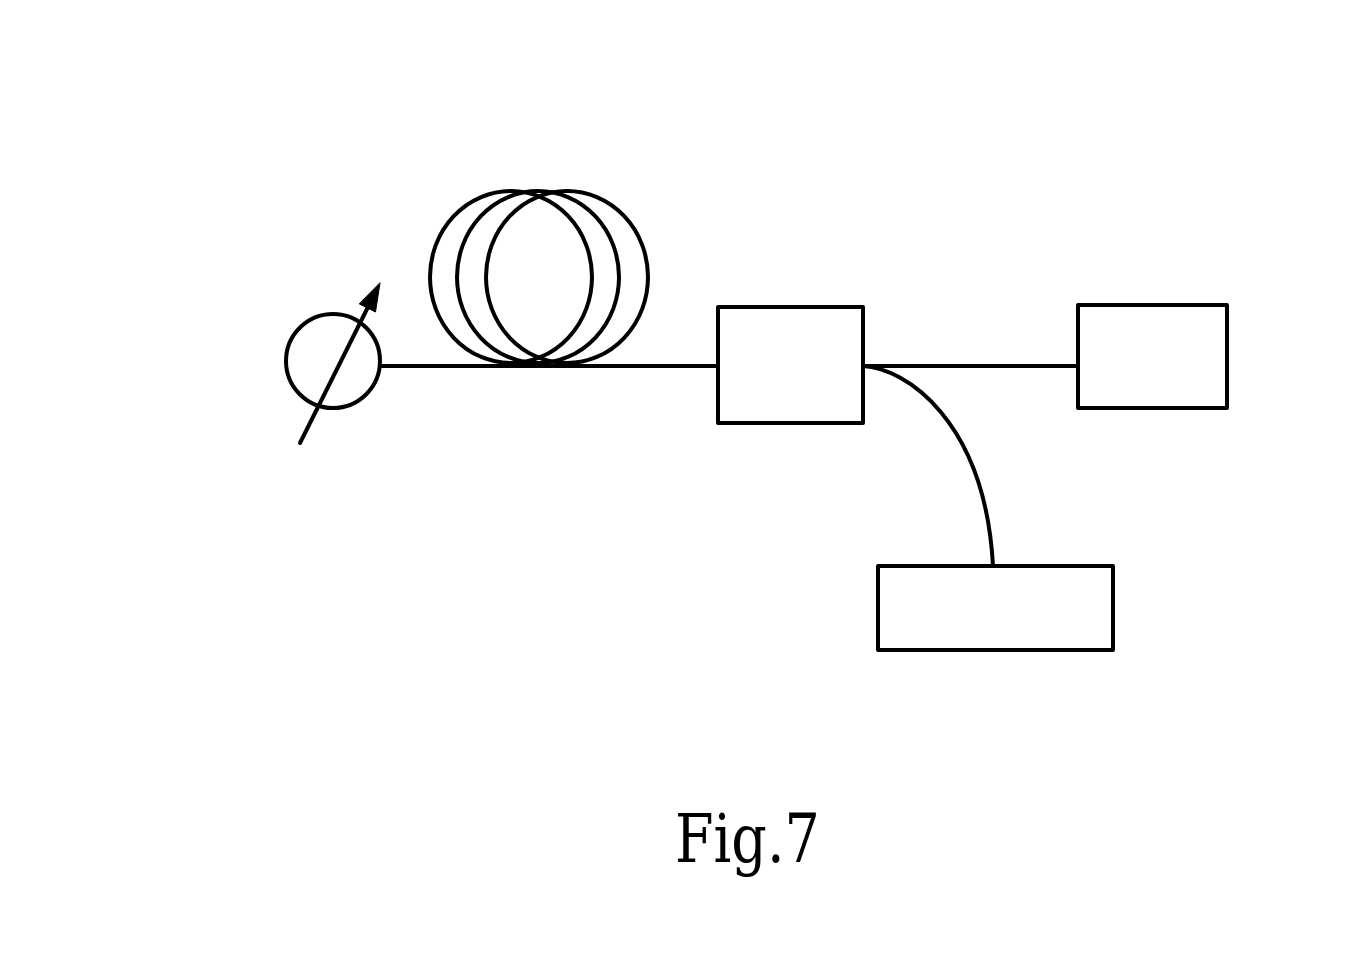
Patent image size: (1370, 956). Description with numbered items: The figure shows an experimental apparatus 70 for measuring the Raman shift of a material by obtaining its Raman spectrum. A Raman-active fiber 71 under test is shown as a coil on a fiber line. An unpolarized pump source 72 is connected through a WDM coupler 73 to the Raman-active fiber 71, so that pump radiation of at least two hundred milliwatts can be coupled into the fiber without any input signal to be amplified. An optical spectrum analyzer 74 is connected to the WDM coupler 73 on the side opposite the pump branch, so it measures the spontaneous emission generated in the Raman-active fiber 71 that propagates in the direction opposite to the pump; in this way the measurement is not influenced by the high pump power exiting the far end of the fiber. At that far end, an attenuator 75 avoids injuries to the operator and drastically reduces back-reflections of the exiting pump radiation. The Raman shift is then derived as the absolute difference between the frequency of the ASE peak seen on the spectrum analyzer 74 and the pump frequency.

The apparatus 70 is at (1119, 144).
The Raman-active fiber 71 is at (602, 197).
The unpolarized pump source 72 is at (1113, 648).
The WDM coupler 73 is at (788, 307).
The optical spectrum analyzer 74 is at (1225, 345).
The attenuator 75 is at (328, 315).